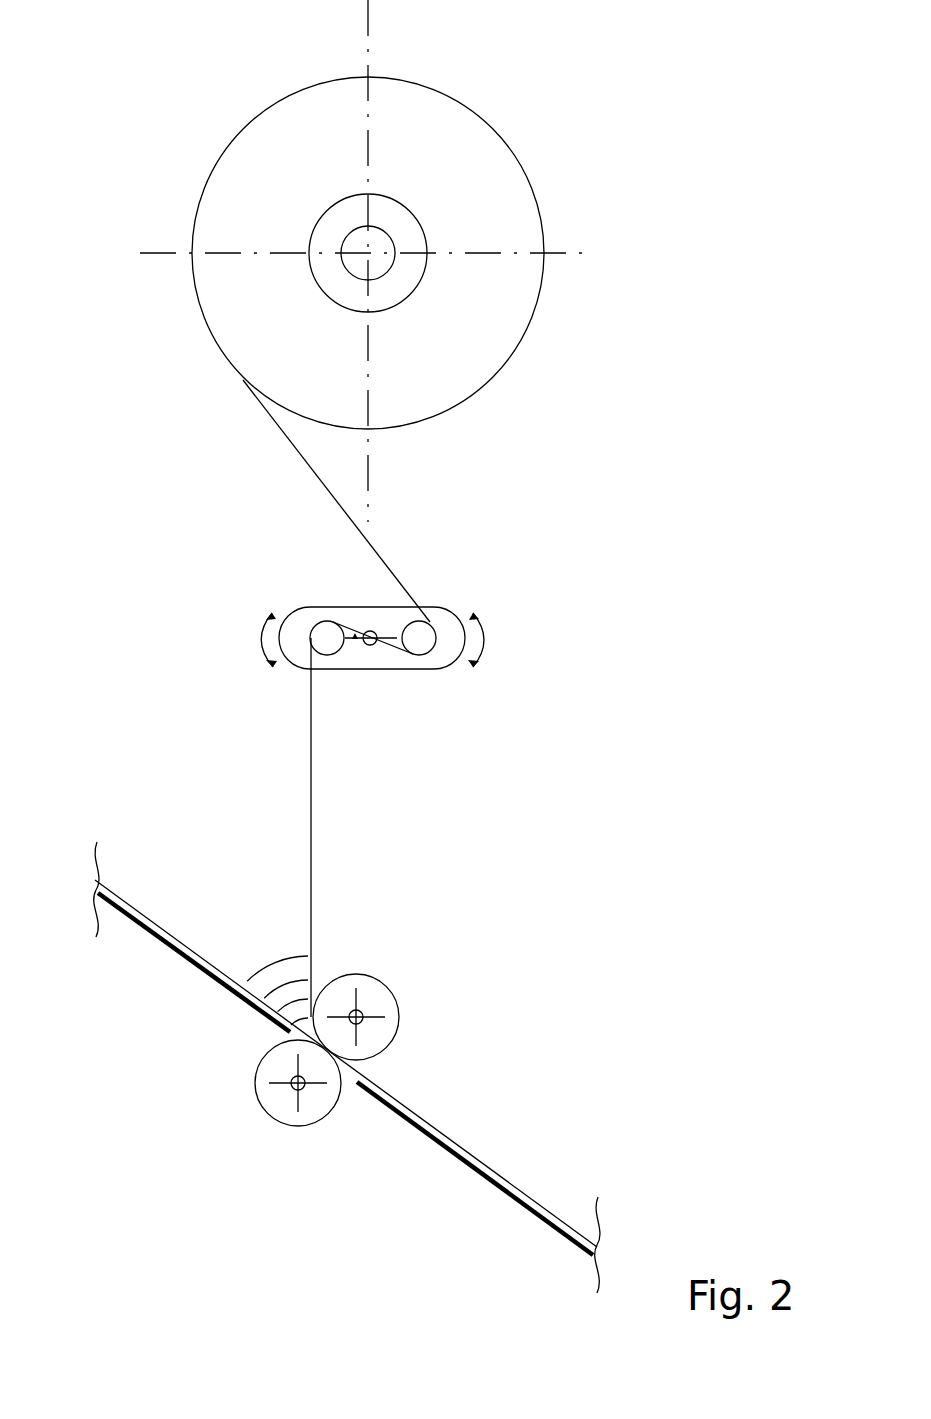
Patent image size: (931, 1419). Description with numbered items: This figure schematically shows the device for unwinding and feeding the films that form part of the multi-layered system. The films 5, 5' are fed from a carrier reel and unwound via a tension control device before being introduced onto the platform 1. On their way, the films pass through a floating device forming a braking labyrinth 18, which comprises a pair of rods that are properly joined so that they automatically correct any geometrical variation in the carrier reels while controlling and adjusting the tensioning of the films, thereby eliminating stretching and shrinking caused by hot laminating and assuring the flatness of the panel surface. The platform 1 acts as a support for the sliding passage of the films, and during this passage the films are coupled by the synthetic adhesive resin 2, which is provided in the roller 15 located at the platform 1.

The film 5 is at (360, 225).
The film 5' is at (360, 225).
The braking labyrinth 18 is at (363, 669).
The synthetic adhesive resin 2 is at (270, 958).
The roller 15 is at (379, 979).
The platform 1 is at (168, 947).